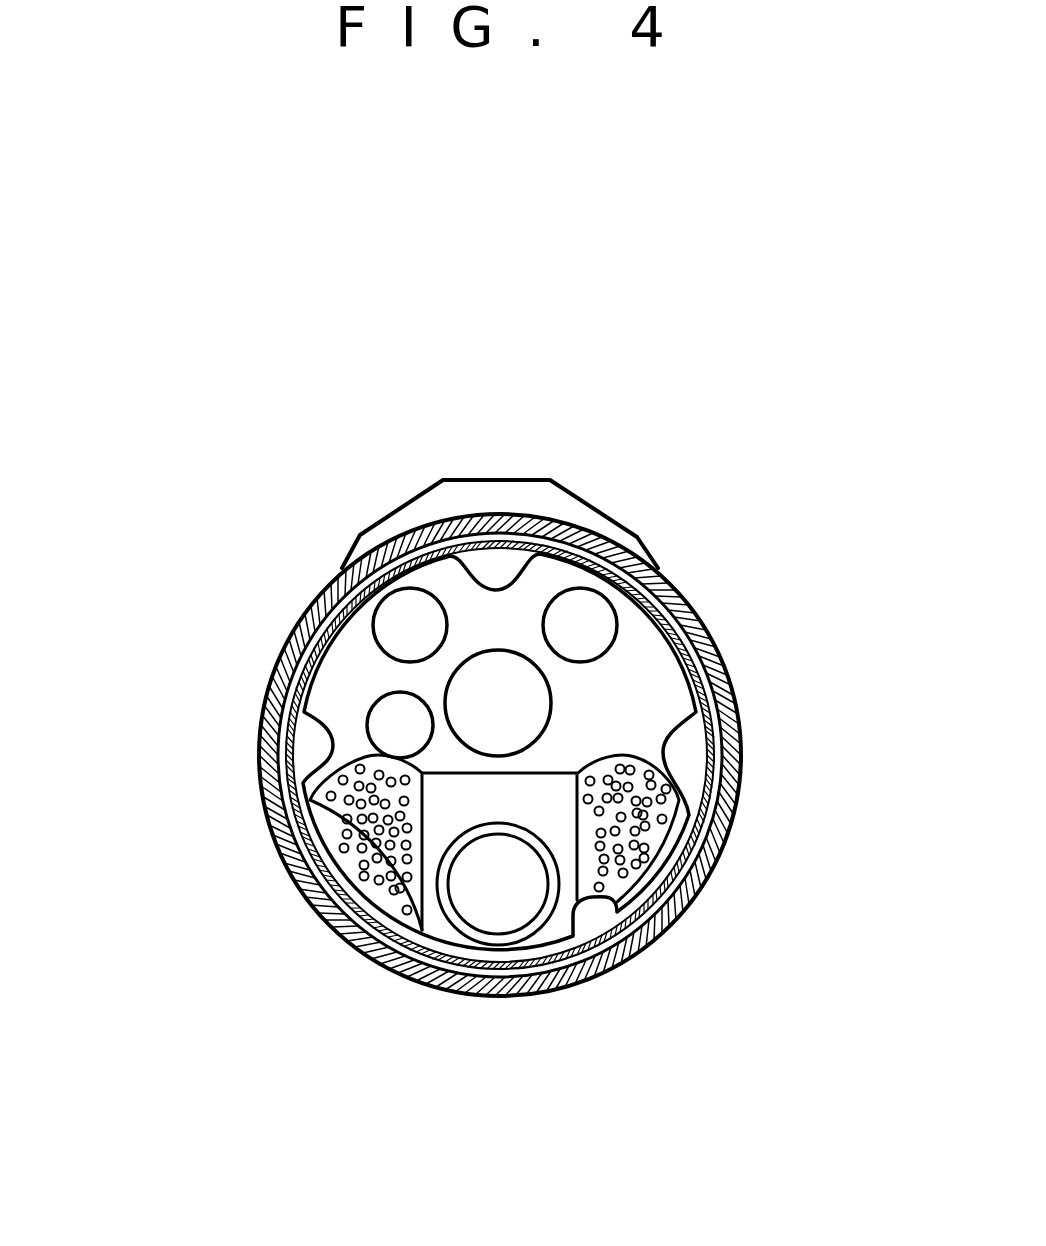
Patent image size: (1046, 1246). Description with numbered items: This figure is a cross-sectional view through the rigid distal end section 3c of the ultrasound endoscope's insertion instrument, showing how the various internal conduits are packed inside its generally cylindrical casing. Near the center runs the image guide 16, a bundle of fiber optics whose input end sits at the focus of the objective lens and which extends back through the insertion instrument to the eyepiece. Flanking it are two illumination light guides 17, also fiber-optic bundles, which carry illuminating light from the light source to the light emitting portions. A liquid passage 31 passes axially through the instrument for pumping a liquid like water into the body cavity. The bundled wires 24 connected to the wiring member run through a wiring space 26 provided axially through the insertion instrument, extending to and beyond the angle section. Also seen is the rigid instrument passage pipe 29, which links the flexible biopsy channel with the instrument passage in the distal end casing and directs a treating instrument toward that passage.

The rigid distal end section 3c is at (457, 488).
The image guide 16 is at (513, 670).
The illumination light guide 17 is at (410, 613).
The wires 24 is at (407, 848).
The wiring space 26 is at (403, 922).
The instrument passage pipe 29 is at (500, 948).
The liquid passage 31 is at (380, 723).